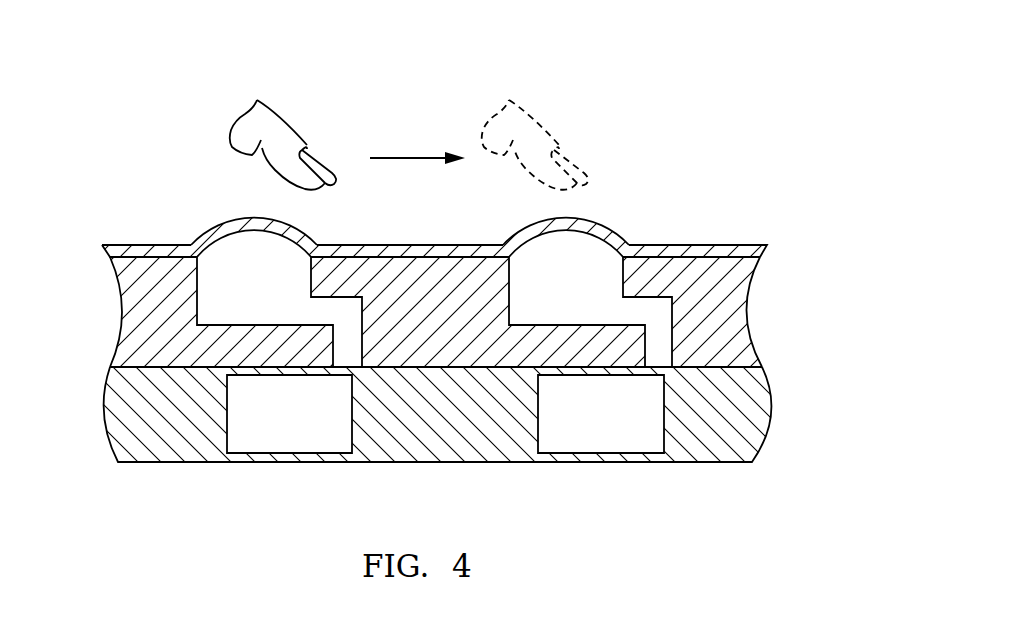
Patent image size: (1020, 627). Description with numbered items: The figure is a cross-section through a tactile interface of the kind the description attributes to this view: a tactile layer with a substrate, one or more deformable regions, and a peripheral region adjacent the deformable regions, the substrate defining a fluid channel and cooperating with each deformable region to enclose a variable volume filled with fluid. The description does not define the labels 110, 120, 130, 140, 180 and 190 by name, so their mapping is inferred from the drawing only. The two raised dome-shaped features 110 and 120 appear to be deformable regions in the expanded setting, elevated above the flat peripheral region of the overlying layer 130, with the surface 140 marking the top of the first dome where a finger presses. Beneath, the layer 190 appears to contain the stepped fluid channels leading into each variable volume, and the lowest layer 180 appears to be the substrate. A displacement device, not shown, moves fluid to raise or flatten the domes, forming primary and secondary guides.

The first key dome 110 is at (217, 227).
The second key dome 120 is at (603, 233).
The cover layer 130 is at (733, 250).
The key top surface 140 is at (283, 224).
The substrate layer 180 is at (172, 440).
The intermediate layer 190 is at (422, 352).